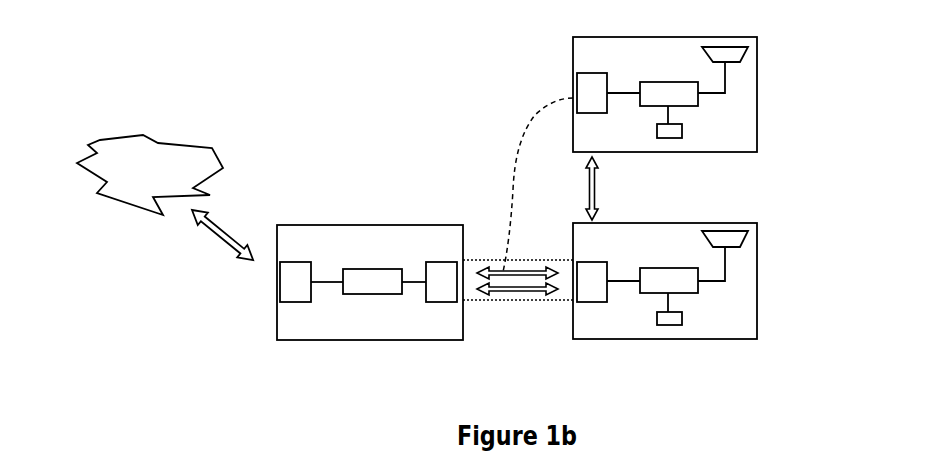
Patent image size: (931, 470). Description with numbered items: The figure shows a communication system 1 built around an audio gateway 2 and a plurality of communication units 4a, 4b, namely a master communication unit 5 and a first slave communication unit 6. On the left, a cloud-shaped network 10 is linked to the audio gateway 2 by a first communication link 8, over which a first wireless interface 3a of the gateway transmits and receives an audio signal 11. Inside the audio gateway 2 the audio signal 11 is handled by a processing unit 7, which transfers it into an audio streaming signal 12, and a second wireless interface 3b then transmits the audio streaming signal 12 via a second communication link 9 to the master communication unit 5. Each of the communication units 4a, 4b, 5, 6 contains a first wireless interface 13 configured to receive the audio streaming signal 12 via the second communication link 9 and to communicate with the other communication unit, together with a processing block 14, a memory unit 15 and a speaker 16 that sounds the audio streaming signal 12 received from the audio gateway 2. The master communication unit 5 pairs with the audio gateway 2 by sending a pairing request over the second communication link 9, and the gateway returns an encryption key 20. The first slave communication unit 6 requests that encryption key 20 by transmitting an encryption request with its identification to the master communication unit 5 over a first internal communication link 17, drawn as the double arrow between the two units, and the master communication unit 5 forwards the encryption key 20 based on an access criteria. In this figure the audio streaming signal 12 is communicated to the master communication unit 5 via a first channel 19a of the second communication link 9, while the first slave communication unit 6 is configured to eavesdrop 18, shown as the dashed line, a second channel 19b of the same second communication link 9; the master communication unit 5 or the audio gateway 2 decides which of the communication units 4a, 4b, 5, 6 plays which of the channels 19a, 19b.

The communication system 1 is at (358, 104).
The audio gateway 2 is at (338, 340).
The first wireless interface 3a is at (297, 302).
The second wireless interface 3b is at (442, 302).
The communication unit 4a is at (707, 281).
The communication unit 4b is at (681, 94).
The master communication unit 5 is at (762, 295).
The first slave communication unit 6 is at (758, 98).
The processing unit 7 is at (393, 298).
The first communication link 8 is at (196, 237).
The second communication link 9 is at (518, 287).
The network 10 is at (198, 138).
The audio signal 11 is at (220, 248).
The audio streaming signal 12 is at (538, 305).
The first wireless interface 13 is at (573, 87).
The processing unit 14 is at (697, 108).
The memory unit 15 is at (660, 140).
The speaker 16 is at (747, 48).
The first internal communication link 17 is at (560, 188).
The eavesdrop 18 is at (533, 118).
The first channel 19a is at (503, 293).
The second channel 19b is at (492, 267).
The encryption key 20 is at (585, 184).